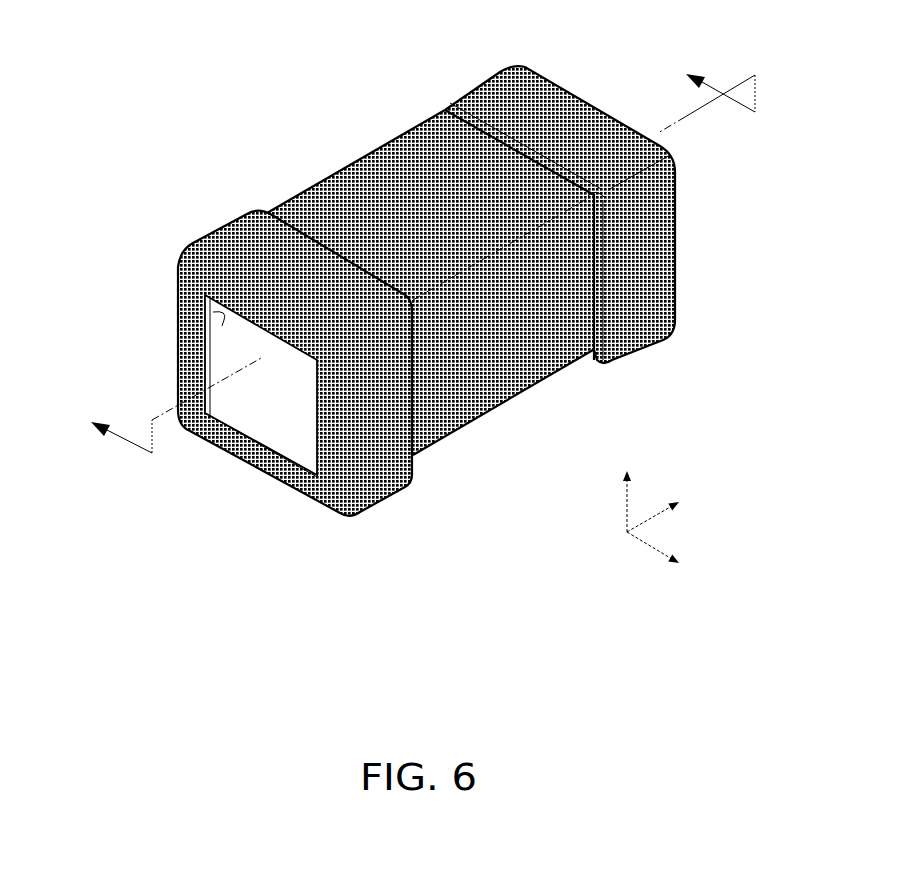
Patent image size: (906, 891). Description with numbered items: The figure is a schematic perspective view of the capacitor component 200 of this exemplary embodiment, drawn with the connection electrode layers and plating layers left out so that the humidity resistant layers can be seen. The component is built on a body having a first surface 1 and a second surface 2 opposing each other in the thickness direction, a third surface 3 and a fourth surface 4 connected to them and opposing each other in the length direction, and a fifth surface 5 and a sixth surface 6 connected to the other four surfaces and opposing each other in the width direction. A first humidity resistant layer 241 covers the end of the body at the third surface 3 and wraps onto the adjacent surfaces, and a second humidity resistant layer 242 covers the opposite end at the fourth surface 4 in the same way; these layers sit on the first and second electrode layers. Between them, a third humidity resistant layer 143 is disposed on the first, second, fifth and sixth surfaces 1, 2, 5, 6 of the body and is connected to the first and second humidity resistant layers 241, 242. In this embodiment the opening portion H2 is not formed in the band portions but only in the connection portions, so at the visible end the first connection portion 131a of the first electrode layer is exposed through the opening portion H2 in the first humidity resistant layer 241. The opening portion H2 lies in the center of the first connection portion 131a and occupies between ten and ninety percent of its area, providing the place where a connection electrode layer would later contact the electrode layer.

The capacitor component 200 is at (228, 65).
The first surface 1 is at (468, 385).
The second surface 2 is at (438, 162).
The third surface 3 is at (259, 422).
The fourth surface 4 is at (650, 232).
The fifth surface 5 is at (528, 356).
The sixth surface 6 is at (380, 183).
The third humidity resistant layer 143 is at (325, 207).
The first connection portion 131a is at (220, 340).
The first humidity resistant layer 241 is at (223, 233).
The second humidity resistant layer 242 is at (480, 82).
The opening portion H2 is at (213, 312).